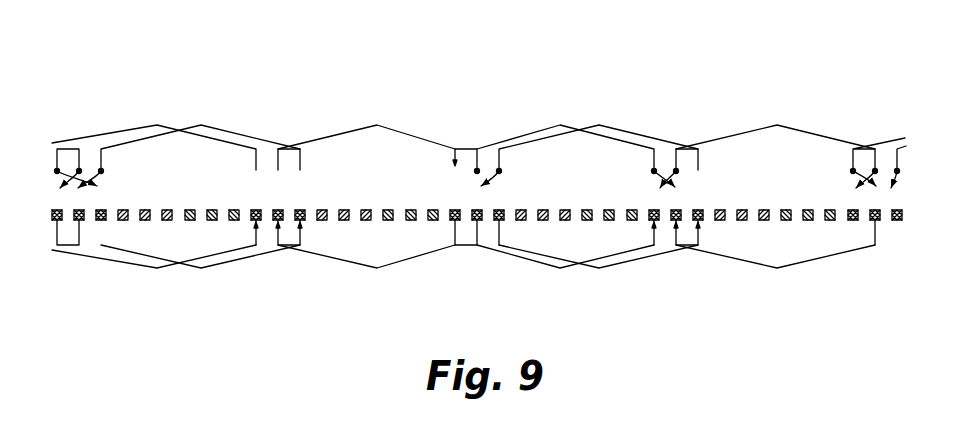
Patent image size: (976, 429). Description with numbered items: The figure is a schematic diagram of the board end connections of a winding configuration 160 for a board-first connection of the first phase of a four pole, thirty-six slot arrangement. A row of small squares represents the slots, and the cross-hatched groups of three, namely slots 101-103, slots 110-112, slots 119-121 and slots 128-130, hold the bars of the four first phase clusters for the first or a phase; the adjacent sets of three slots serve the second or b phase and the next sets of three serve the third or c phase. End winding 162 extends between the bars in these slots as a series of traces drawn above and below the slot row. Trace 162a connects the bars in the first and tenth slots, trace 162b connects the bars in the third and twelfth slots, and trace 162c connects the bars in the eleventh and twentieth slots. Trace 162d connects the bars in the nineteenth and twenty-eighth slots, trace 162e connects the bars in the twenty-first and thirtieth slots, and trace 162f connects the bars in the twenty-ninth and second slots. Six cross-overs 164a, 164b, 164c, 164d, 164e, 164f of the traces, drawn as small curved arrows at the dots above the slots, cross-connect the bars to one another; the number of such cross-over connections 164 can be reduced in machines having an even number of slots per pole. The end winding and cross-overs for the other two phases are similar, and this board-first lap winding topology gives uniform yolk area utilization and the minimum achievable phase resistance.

The winding configuration 160 is at (593, 85).
The end winding 162 is at (305, 127).
The trace 162a is at (130, 133).
The trace 162b is at (222, 124).
The trace 162c is at (352, 131).
The trace 162d is at (518, 132).
The trace 162e is at (642, 132).
The trace 162f is at (731, 128).
The cross-over connections 164 is at (909, 181).
The cross-over 164a is at (58, 187).
The cross-over 164b is at (80, 176).
The cross-over 164c is at (98, 186).
The cross-over 164d is at (496, 187).
The cross-over 164e is at (501, 173).
The cross-over 164f is at (655, 172).
The slots 101-103 is at (82, 263).
The slots 110-112 is at (288, 260).
The slots 119-121 is at (450, 259).
The slots 128-130 is at (682, 259).